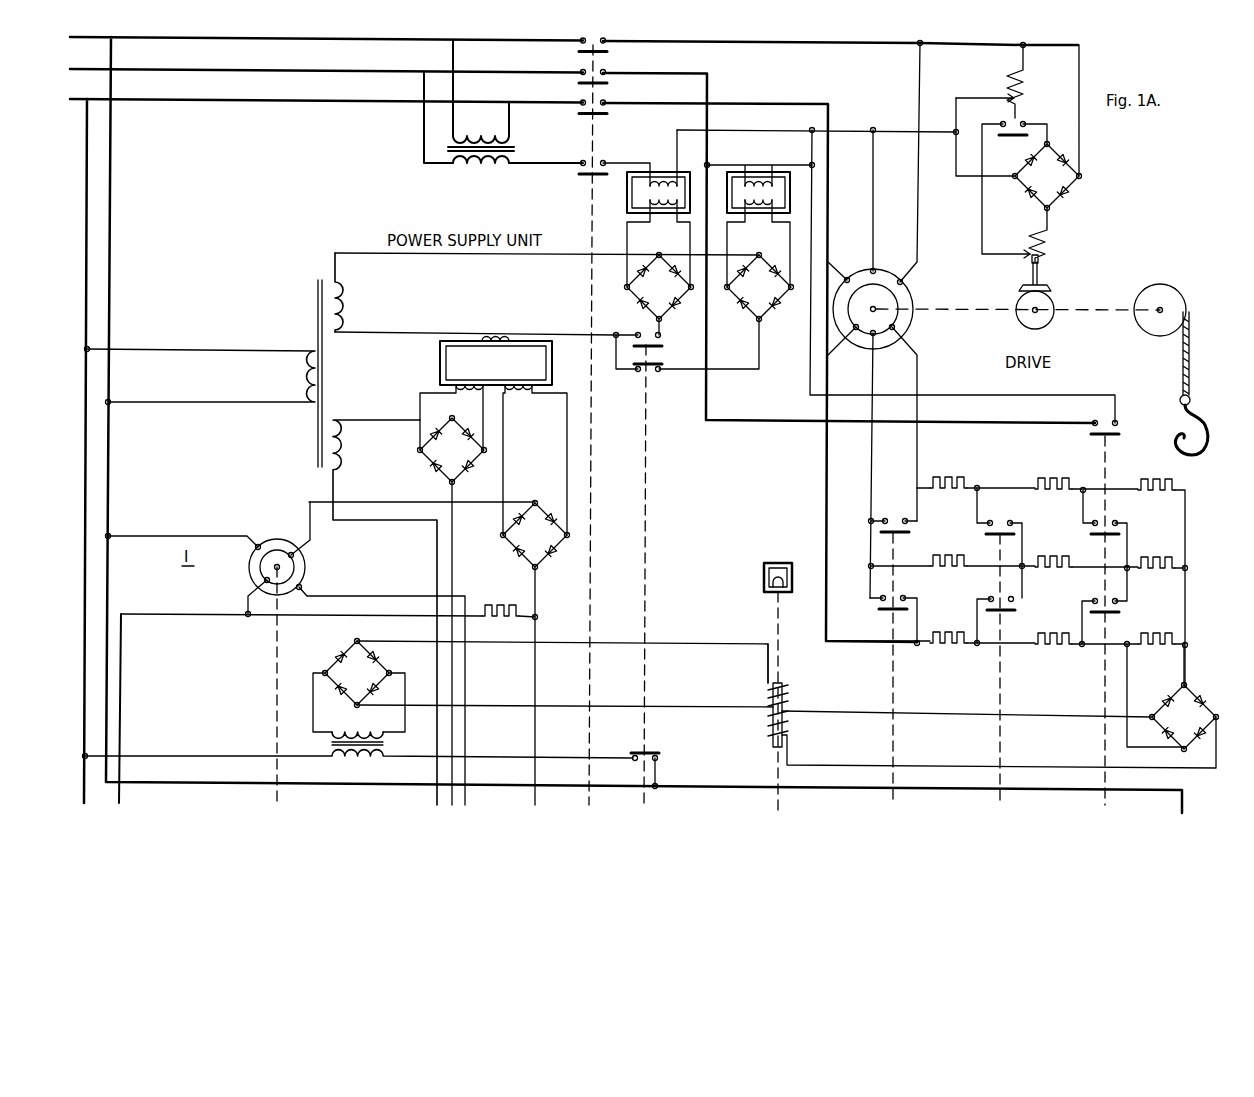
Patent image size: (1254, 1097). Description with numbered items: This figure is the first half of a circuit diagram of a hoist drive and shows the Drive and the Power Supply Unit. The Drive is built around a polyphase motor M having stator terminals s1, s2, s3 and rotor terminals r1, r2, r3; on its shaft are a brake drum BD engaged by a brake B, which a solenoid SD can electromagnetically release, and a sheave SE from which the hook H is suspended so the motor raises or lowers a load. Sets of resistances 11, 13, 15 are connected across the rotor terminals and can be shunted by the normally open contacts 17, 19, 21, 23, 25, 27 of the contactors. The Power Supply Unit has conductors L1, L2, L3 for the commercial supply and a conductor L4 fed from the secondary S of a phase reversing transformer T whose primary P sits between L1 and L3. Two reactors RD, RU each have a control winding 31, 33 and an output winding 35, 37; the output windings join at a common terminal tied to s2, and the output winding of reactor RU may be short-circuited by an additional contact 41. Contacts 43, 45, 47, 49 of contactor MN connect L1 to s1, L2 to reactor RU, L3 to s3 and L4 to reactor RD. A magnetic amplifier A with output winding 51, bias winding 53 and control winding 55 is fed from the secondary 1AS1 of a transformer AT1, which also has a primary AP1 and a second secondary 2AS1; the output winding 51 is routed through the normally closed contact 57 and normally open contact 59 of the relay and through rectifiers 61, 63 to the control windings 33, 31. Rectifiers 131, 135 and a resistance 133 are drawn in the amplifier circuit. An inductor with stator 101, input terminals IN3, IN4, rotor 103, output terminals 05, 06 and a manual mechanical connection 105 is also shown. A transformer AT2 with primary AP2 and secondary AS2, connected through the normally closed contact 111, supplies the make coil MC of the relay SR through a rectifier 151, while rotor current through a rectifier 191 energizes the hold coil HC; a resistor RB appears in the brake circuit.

The conductor L1 is at (202, 46).
The conductor L2 is at (202, 77).
The conductor L3 is at (204, 107).
The conductor L4 is at (556, 170).
The phase reversing transformer T is at (491, 113).
The primary P is at (484, 136).
The secondary S is at (480, 172).
The contact 43 is at (600, 38).
The contact 45 is at (600, 70).
The contact 47 is at (600, 100).
The contact 49 is at (600, 161).
The reactor RD is at (643, 208).
The reactor RU is at (760, 213).
The output winding 35 is at (664, 162).
The control winding 31 is at (658, 226).
The output winding 37 is at (748, 162).
The control winding 33 is at (763, 226).
The rectifier 63 is at (628, 296).
The rectifier 61 is at (726, 311).
The normally open contact 59 is at (662, 338).
The normally closed contact 57 is at (658, 373).
The transformer AT1 is at (314, 287).
The secondary 1AS1 is at (342, 295).
The secondary 2AS1 is at (338, 432).
The primary AP1 is at (302, 374).
The magnetic amplifier A is at (490, 425).
The output winding 51 is at (490, 335).
The bias winding 53 is at (462, 395).
The control winding 55 is at (520, 396).
The rectifier bridge 131 is at (424, 460).
The rectifier bridge 135 is at (502, 542).
The resistor 133 is at (504, 600).
The rotor 103 is at (286, 653).
The stator 101 is at (258, 561).
The input terminal IN3 is at (260, 533).
The input terminal IN4 is at (304, 587).
The output terminal 06 is at (296, 553).
The output terminal 05 is at (252, 580).
The mechanical connection 105 is at (274, 652).
The rectifier 151 is at (344, 640).
The secondary AS2 is at (360, 728).
The transformer AT2 is at (384, 745).
The primary AP2 is at (358, 762).
The normally closed contact 111 is at (638, 762).
The make coil MC is at (784, 695).
The hold coil HC is at (784, 733).
The relay SR is at (775, 766).
The rectifier 191 is at (1165, 708).
The additional contact 41 is at (1096, 420).
The polyphase motor M is at (872, 320).
The stator terminal s1 is at (904, 283).
The stator terminal s2 is at (876, 272).
The stator terminal s3 is at (840, 280).
The rotor terminal r1 is at (900, 329).
The rotor terminal r2 is at (876, 342).
The rotor terminal r3 is at (850, 344).
The brake resistor RB is at (1022, 92).
The solenoid SD is at (1046, 243).
The brake B is at (1022, 288).
The brake drum BD is at (1050, 323).
The sheave SE is at (1154, 286).
The hook H is at (1204, 422).
The normally open contact 25 is at (894, 510).
The normally open contact 27 is at (876, 598).
The normally open contact 21 is at (1000, 522).
The normally open contact 23 is at (988, 596).
The normally open contact 17 is at (1108, 522).
The normally open contact 19 is at (1096, 597).
The resistance 15 is at (938, 474).
The resistance 13 is at (1052, 476).
The resistance 11 is at (1152, 474).